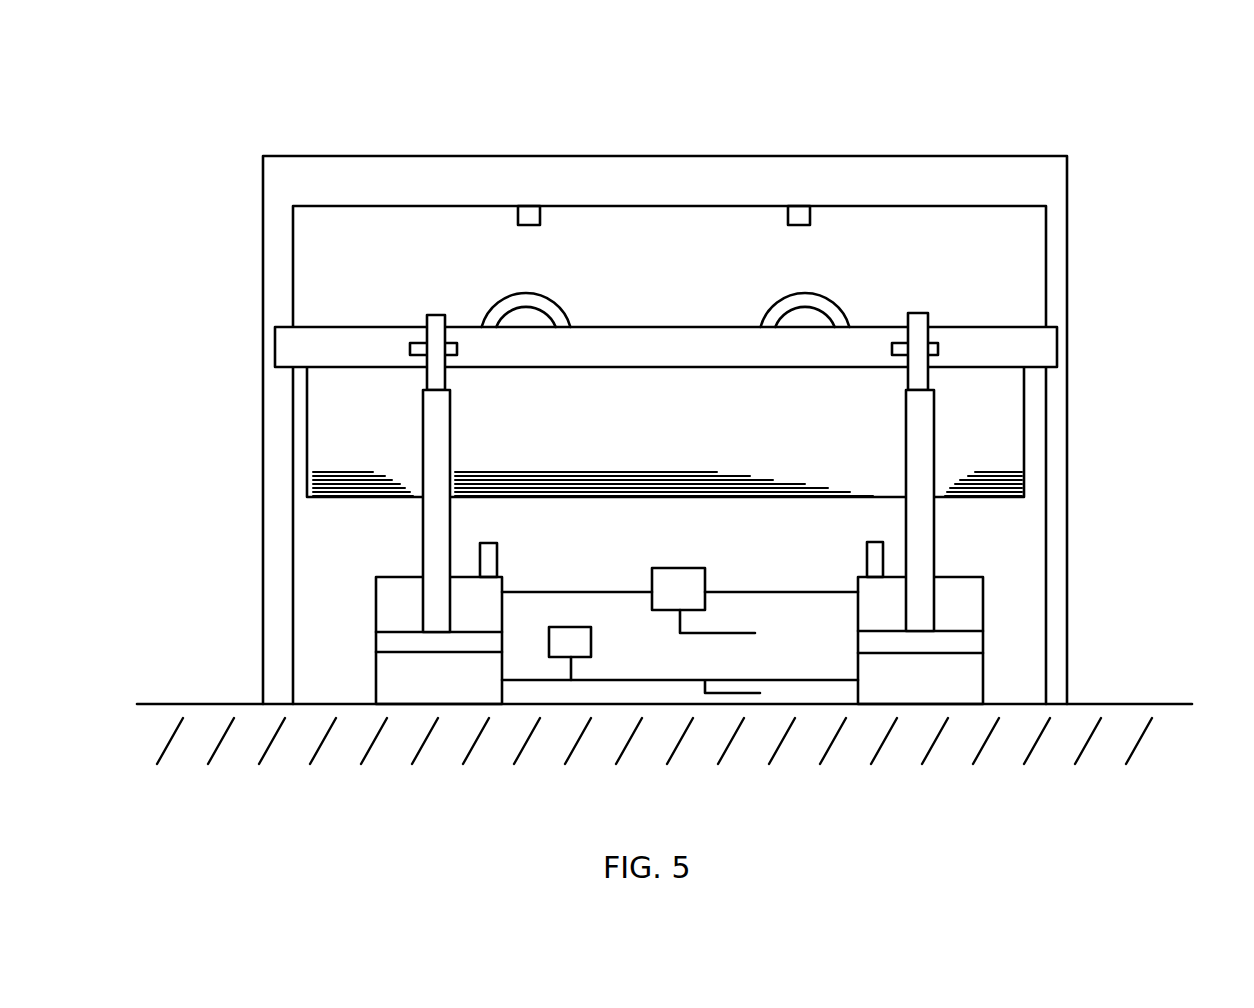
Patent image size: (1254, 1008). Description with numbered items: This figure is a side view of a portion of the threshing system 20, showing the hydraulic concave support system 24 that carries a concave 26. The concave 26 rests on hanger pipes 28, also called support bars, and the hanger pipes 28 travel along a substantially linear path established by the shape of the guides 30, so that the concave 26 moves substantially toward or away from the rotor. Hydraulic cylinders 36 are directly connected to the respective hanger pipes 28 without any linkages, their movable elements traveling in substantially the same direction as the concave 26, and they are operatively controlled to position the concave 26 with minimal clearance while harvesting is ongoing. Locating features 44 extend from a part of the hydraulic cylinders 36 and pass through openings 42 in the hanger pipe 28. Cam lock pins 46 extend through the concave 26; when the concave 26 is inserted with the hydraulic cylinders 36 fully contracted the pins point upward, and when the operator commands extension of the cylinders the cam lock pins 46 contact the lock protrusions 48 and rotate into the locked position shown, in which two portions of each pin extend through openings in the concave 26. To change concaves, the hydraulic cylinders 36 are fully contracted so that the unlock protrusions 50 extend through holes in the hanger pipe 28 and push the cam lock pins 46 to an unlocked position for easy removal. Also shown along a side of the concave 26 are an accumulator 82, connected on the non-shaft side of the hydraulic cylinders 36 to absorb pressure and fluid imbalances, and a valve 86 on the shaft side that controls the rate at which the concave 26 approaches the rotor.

The threshing system 20 is at (1100, 68).
The hydraulic concave support system 24 is at (1156, 476).
The concave 26 is at (1024, 423).
The hanger pipe 28 is at (1057, 340).
The guide 30 is at (263, 428).
The hydraulic cylinder 36 is at (376, 599).
The opening 42 is at (409, 351).
The locating feature 44 is at (435, 315).
The cam lock pin 46 is at (777, 300).
The lock protrusion 48 is at (540, 207).
The unlock protrusion 50 is at (497, 557).
The accumulator 82 is at (591, 645).
The valve 86 is at (680, 568).